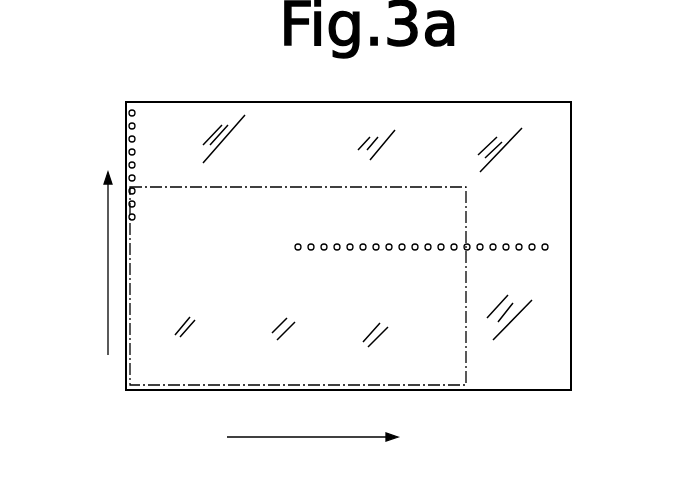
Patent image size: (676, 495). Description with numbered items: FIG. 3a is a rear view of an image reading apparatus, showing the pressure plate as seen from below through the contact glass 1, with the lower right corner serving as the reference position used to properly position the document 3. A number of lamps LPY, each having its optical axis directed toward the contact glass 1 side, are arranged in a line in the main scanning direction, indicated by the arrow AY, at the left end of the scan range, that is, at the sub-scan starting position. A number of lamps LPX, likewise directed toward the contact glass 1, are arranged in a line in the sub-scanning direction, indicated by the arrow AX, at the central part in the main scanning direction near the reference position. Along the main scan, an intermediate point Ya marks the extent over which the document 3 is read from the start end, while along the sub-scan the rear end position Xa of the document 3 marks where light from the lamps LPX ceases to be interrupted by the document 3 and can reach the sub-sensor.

The contact glass 1 is at (488, 114).
The document 3 is at (466, 363).
The lamps LPY is at (129, 165).
The lamps LPX is at (545, 244).
The intermediate point of main scan Ya is at (124, 181).
The rear end position of document Xa is at (466, 388).
The main scanning direction arrow AY is at (87, 263).
The sub-scanning direction arrow AX is at (293, 427).